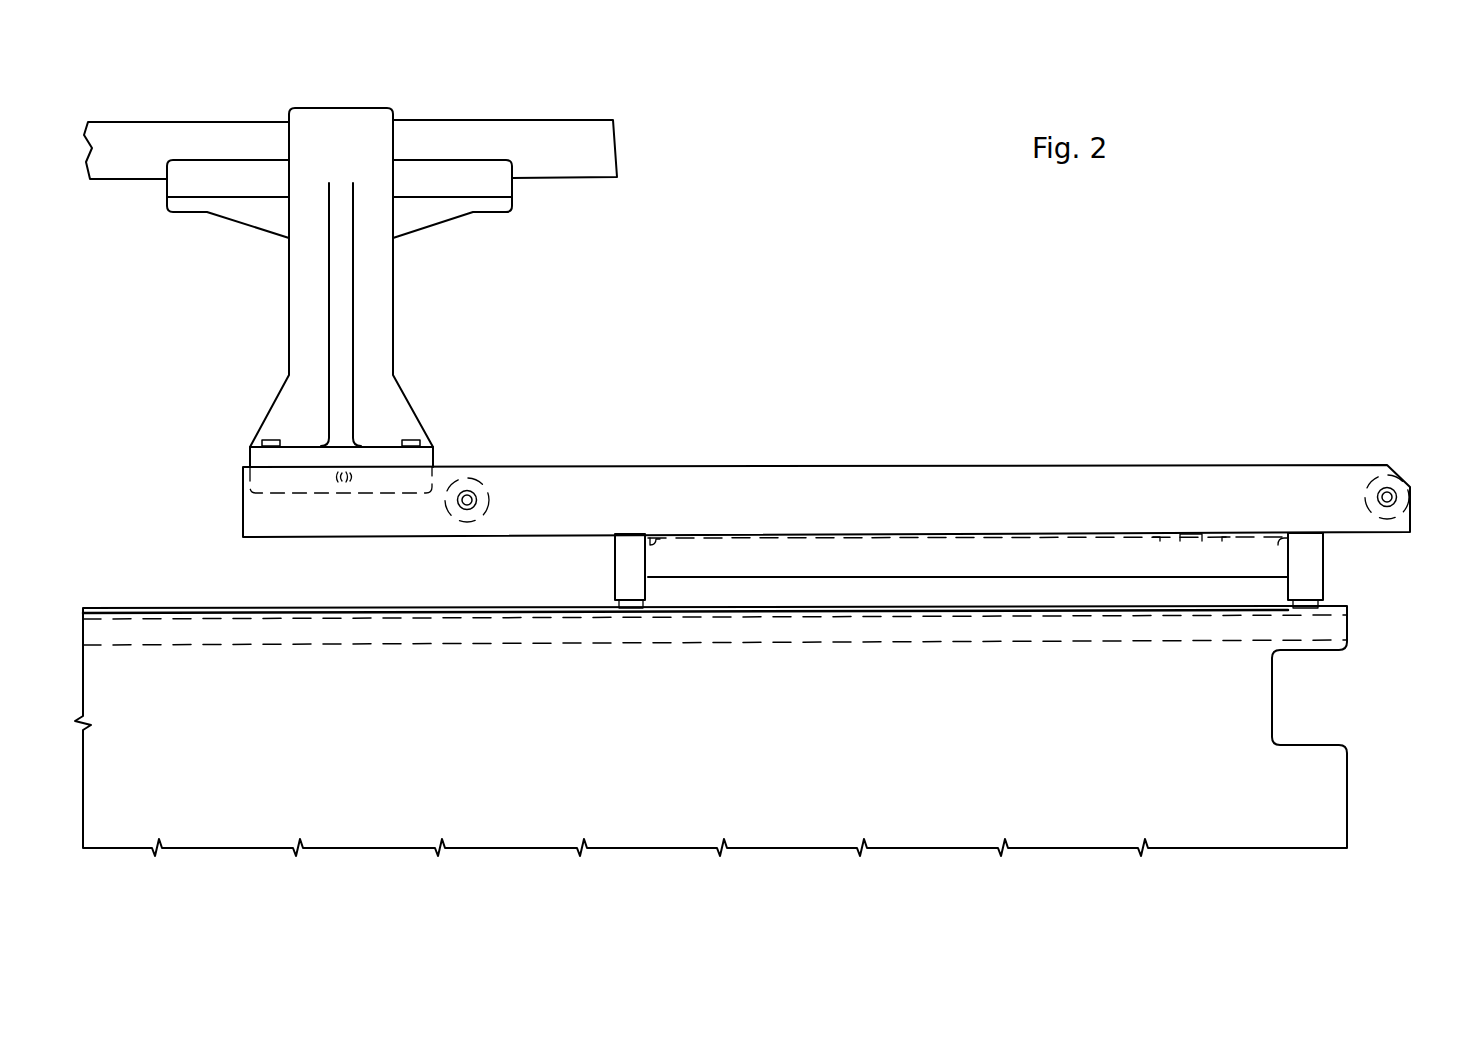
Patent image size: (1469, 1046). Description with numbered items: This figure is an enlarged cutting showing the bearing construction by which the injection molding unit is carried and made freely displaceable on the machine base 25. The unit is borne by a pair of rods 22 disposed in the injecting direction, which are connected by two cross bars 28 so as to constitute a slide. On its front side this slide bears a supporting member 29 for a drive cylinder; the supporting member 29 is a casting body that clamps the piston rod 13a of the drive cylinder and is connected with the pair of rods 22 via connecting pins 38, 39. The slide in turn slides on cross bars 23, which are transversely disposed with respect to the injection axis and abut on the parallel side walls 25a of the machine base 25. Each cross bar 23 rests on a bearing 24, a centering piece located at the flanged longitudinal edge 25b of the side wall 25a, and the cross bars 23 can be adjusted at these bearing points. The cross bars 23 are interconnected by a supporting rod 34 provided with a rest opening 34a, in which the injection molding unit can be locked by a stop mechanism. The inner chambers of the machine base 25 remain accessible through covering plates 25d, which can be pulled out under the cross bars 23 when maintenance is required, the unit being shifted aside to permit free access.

The piston rod 13a is at (592, 143).
The supporting member 29 is at (380, 315).
The connecting pin 39 is at (268, 438).
The pair of rods 22 is at (847, 487).
The cross bar 28 is at (475, 494).
The supporting rod 34 is at (1020, 571).
The rest opening 34a is at (1172, 528).
The cross bar 23 is at (625, 572).
The bearing 24 is at (632, 607).
The machine base 25 is at (700, 686).
The side wall 25a is at (853, 755).
The flanged longitudinal edge 25b is at (987, 627).
The covering plate 25d is at (370, 607).
The connecting pin 38 is at (345, 496).